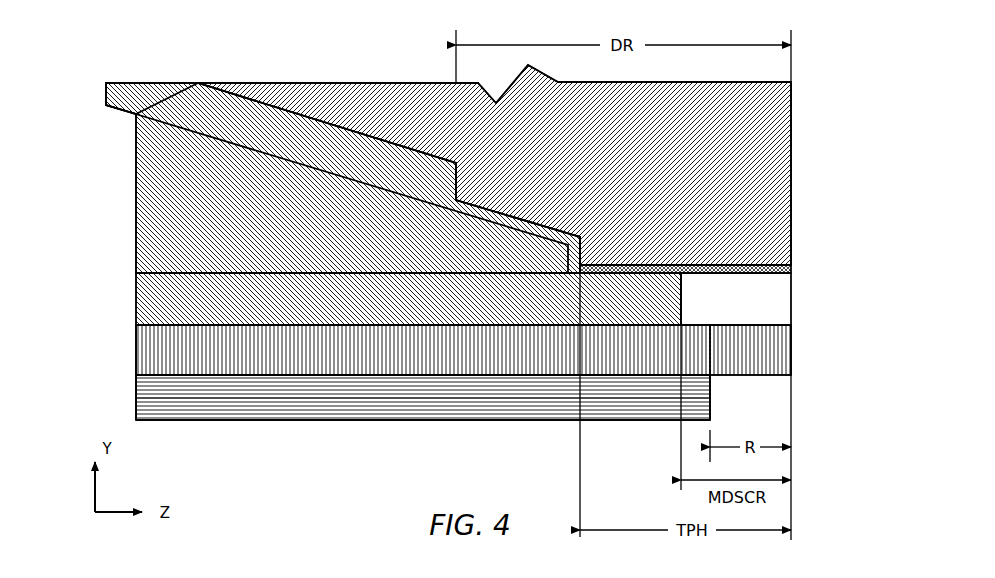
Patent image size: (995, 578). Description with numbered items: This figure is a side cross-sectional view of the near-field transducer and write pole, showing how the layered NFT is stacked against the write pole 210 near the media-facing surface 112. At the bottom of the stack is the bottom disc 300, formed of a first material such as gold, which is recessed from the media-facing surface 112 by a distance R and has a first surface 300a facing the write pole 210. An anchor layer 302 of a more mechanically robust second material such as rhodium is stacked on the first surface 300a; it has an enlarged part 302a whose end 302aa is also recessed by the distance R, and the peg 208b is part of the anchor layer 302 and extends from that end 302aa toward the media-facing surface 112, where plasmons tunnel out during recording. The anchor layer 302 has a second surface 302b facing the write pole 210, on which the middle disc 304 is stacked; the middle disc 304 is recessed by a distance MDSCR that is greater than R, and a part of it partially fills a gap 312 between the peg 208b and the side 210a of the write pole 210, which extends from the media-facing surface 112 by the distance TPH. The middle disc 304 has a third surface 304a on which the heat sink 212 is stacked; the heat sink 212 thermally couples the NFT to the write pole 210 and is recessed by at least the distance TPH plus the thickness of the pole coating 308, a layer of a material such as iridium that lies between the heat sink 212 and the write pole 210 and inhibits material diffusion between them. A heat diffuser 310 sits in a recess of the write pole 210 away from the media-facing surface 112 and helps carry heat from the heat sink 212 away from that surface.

The media-facing surface 112 is at (791, 128).
The peg 208b is at (777, 343).
The write pole 210 is at (778, 183).
The side of the write pole 210a is at (777, 250).
The heat sink 212 is at (137, 197).
The bottom disc 300 is at (272, 412).
The first surface 300a is at (160, 380).
The anchor layer 302 is at (347, 378).
The enlarged part 302a is at (472, 378).
The end of the enlarged part 302aa is at (710, 358).
The second surface 302b is at (157, 330).
The middle disc 304 is at (150, 308).
The third surface 304a is at (157, 276).
The pole coating 308 is at (791, 268).
The heat diffuser 310 is at (162, 83).
The gap 312 is at (791, 298).